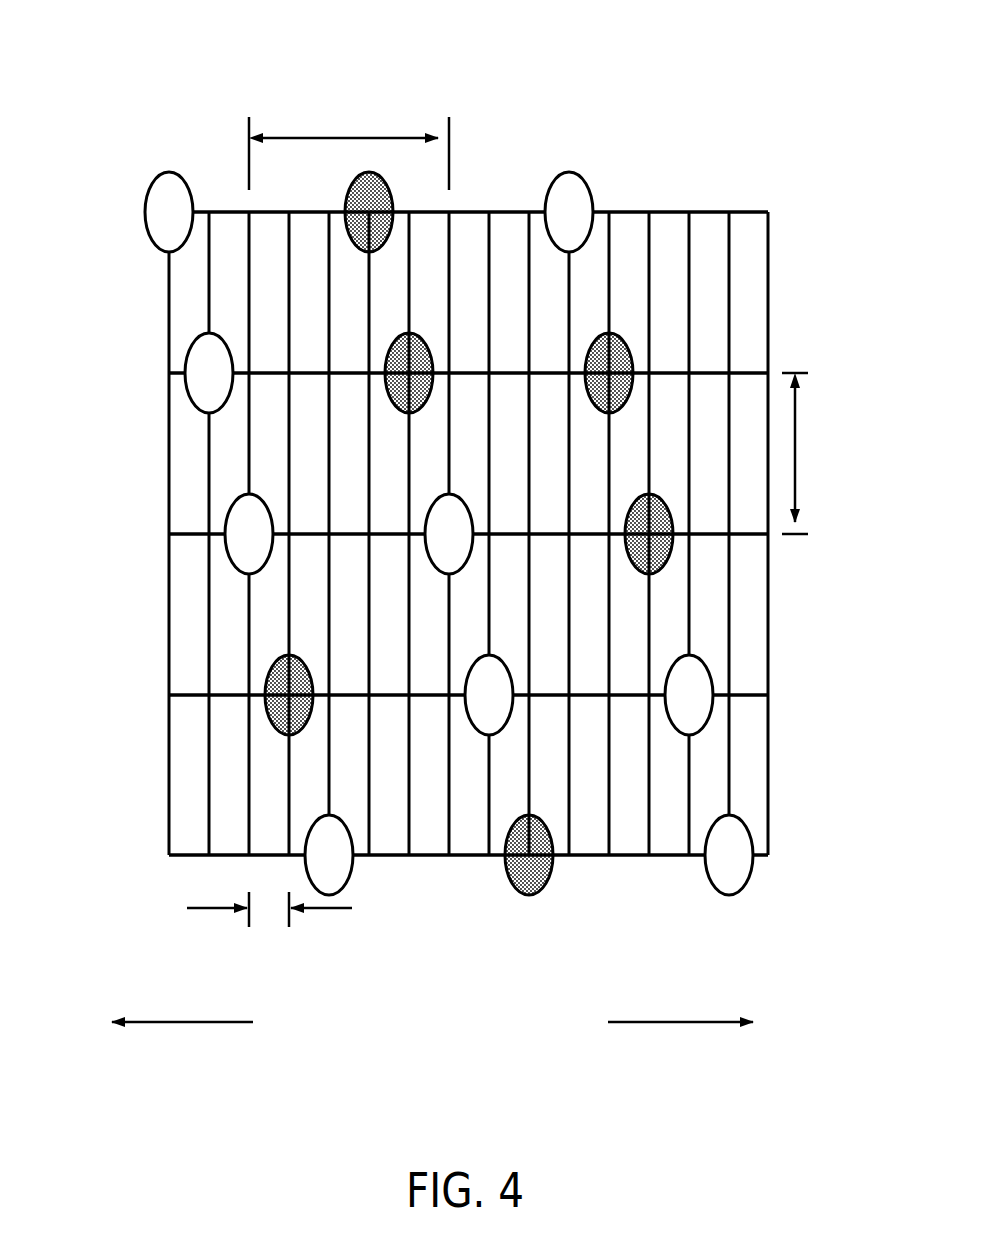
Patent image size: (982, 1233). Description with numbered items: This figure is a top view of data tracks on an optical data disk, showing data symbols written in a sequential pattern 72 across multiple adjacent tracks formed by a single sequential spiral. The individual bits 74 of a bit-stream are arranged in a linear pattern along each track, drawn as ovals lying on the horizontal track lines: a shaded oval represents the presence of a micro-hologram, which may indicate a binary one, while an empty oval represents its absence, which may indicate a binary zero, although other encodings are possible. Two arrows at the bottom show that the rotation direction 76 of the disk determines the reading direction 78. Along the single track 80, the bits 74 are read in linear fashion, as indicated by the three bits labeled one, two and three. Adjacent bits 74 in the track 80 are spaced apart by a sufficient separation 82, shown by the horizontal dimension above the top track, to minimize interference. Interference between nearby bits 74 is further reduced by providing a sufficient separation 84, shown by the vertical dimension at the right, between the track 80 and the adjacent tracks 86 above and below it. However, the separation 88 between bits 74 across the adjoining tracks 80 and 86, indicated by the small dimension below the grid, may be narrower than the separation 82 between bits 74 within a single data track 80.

The sequential pattern 72 is at (155, 72).
The bits 74 is at (590, 193).
The rotation direction 76 is at (188, 1022).
The reading direction 78 is at (677, 1022).
The single track 80 is at (145, 533).
The separation between adjacent bits 82 is at (348, 138).
The separation between tracks 84 is at (796, 453).
The adjacent tracks 86 is at (145, 371).
The separation between bits across adjoining tracks 88 is at (268, 912).